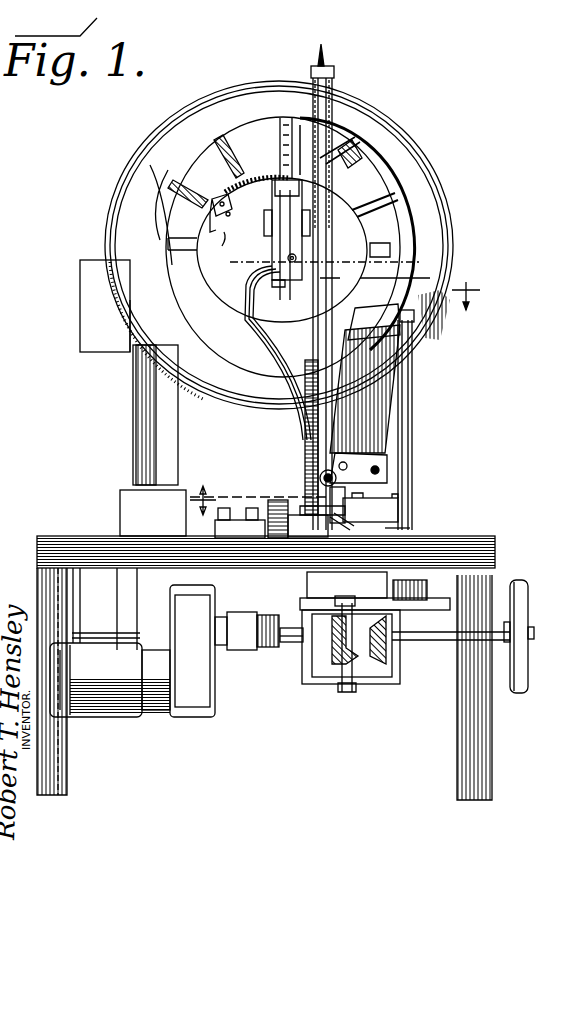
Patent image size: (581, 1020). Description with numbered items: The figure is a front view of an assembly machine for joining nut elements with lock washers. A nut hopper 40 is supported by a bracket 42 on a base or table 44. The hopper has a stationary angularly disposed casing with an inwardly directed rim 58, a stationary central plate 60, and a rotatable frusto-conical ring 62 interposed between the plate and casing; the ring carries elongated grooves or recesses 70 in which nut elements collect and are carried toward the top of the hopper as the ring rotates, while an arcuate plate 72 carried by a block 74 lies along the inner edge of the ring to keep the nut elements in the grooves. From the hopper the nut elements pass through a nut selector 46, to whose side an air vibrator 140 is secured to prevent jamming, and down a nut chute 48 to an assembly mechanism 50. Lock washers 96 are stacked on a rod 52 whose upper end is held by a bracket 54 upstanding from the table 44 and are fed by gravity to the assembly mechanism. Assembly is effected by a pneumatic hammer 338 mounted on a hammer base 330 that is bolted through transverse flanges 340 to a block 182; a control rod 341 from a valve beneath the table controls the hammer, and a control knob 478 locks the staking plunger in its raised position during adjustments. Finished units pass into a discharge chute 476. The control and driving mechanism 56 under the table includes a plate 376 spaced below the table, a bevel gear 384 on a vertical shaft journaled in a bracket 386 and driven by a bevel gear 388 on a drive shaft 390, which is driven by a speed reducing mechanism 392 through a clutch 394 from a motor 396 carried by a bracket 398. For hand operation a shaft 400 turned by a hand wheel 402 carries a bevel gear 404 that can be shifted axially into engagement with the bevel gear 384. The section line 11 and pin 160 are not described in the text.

The nut hopper 40 is at (108, 172).
The inwardly directed rim 58 is at (234, 102).
The arcuate plate 72 is at (266, 172).
The pin 160 is at (328, 72).
The bracket 54 is at (336, 88).
The rotatable frusto-conical ring 62 is at (333, 148).
The rod 52 is at (360, 160).
The elongated grooves or recesses 70 is at (196, 208).
The stationary central plate 60 is at (353, 228).
The block 74 is at (232, 222).
The nut selector 46 is at (262, 256).
The air vibrator 140 is at (372, 274).
The section line 11 is at (488, 278).
The control and driving mechanism 56 is at (120, 314).
The pneumatic hammer 338 is at (415, 330).
The nut chute 48 is at (245, 340).
The control rod 341 is at (410, 395).
The bracket 42 is at (146, 425).
The lock washers 96 is at (303, 443).
The assembly mechanism 50 is at (288, 488).
The control knob 478 is at (322, 475).
The hammer base 330 is at (377, 485).
The transverse flanges 340 is at (375, 512).
The bracket 398 is at (118, 592).
The base or table 44 is at (462, 552).
The block 182 is at (405, 532).
The discharge chute 476 is at (330, 560).
The plate 376 is at (450, 604).
The hand wheel 402 is at (580, 640).
The clutch 394 is at (248, 635).
The shaft 400 is at (415, 642).
The drive shaft 390 is at (290, 660).
The bevel gear 388 is at (300, 680).
The bevel gear 384 is at (348, 692).
The bevel gear 404 is at (380, 660).
The bracket 386 is at (318, 680).
The motor 396 is at (102, 700).
The speed reducing mechanism 392 is at (175, 718).